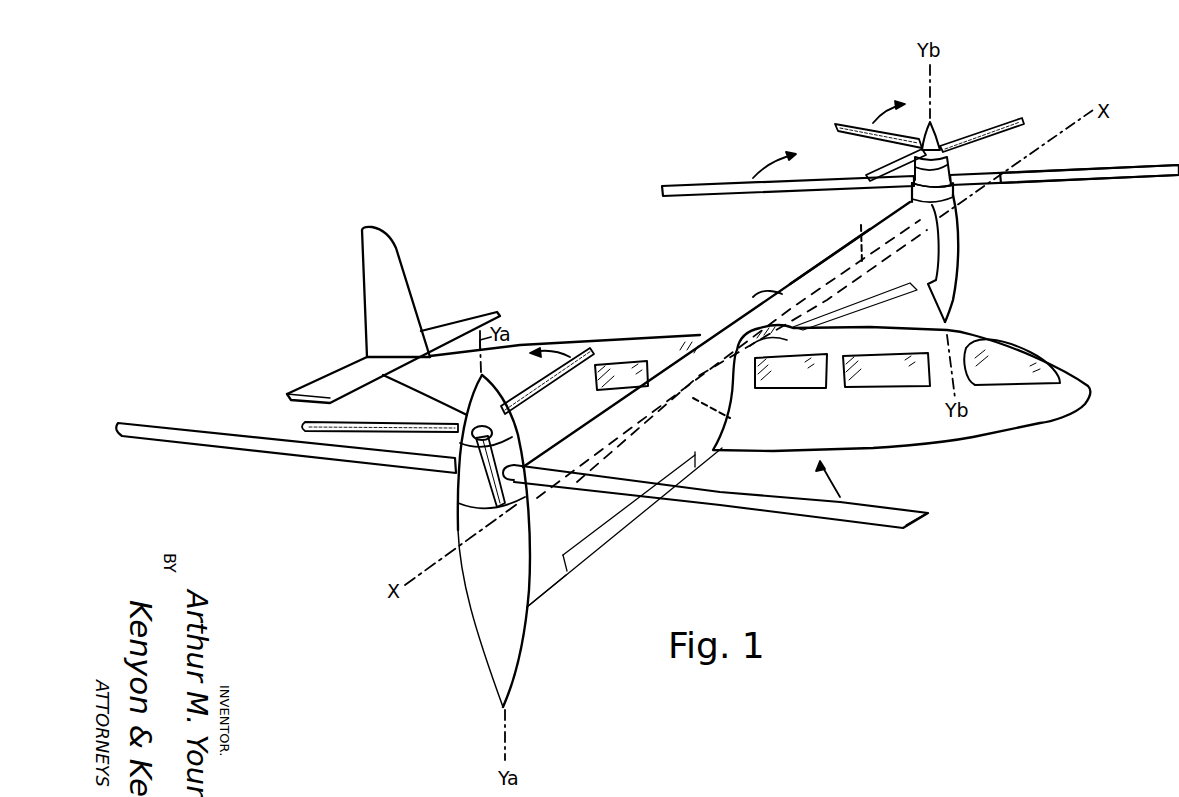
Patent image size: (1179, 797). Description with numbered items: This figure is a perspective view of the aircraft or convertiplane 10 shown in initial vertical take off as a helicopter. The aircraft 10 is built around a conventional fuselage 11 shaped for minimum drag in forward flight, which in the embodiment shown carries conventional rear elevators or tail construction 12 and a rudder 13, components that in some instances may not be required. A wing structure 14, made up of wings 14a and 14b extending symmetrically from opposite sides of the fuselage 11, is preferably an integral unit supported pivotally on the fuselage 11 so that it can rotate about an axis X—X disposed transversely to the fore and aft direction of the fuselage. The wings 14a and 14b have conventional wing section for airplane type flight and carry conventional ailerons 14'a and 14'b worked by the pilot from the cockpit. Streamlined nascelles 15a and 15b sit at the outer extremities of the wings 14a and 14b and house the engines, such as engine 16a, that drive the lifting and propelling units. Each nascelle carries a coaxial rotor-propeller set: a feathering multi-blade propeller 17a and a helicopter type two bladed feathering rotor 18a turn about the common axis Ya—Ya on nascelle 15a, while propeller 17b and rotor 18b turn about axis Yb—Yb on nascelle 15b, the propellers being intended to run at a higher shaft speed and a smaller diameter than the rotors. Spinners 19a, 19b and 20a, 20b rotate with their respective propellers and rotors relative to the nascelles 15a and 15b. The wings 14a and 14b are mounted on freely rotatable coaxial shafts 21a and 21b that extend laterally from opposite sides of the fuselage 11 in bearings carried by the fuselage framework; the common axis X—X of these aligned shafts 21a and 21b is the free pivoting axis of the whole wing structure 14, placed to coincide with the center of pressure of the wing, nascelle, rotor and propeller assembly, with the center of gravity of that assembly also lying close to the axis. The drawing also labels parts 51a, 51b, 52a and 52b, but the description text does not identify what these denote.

The aircraft or convertiplane 10 is at (983, 443).
The fuselage 11 is at (961, 336).
The rear elevators or tail construction 12 is at (460, 315).
The rudder 13 is at (397, 273).
The wing structure 14 is at (725, 350).
The wing 14a is at (613, 502).
The aileron 14'a is at (573, 581).
The wing 14b is at (820, 277).
The aileron 14'b is at (867, 306).
The nascelle 15a is at (484, 629).
The nascelle 15b is at (955, 241).
The engine 16a is at (468, 567).
The propeller 17a is at (538, 399).
The propeller 17b is at (958, 125).
The two bladed feathering rotor 18a is at (370, 458).
The two bladed feathering rotor 18b is at (1100, 173).
The spinner 19a is at (489, 392).
The spinner 19b is at (942, 155).
The spinner 20a is at (473, 486).
The spinner 20b is at (955, 204).
The coaxial shaft 21a is at (730, 418).
The coaxial shaft 21b is at (861, 224).
The near wing panel 51a is at (250, 443).
The far wing panel 51b is at (717, 192).
The near propeller blade 52a is at (360, 424).
The far propeller blade 52b is at (1016, 118).